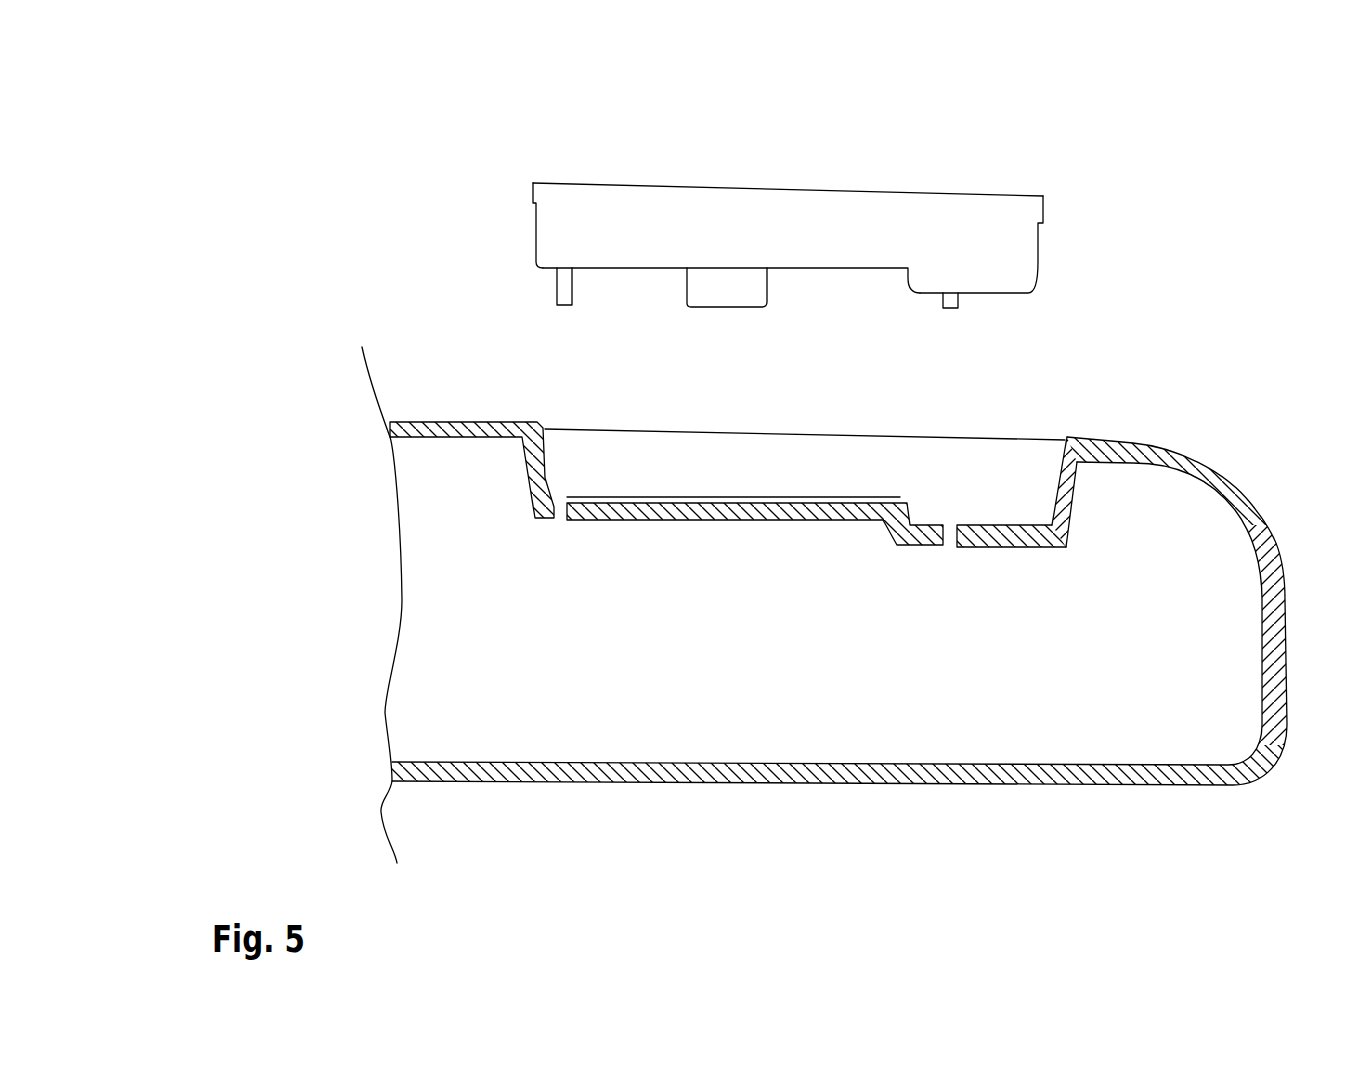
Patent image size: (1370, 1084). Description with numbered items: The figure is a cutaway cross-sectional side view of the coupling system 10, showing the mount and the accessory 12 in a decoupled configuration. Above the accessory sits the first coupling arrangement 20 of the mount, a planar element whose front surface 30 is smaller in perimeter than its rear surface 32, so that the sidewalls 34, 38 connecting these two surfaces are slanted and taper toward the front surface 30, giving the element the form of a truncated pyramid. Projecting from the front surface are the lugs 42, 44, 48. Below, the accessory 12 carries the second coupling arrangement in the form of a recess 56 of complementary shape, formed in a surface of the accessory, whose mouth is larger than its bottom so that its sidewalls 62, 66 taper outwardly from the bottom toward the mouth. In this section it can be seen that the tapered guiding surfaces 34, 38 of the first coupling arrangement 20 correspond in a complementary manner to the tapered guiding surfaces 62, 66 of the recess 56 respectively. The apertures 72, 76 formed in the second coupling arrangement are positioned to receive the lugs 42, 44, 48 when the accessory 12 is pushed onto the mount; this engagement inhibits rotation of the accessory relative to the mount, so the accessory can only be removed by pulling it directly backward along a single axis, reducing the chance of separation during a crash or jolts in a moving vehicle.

The coupling system 10 is at (243, 132).
The accessory 12 is at (1150, 808).
The first coupling arrangement 20 is at (628, 134).
The front surface 30 is at (633, 265).
The rear surface 32 is at (922, 193).
The sidewall 34 is at (1045, 227).
The sidewall 38 is at (535, 210).
The lug 42 is at (716, 294).
The lug 44 is at (952, 310).
The lug 48 is at (555, 292).
The recess 56 is at (790, 461).
The sidewall 62 is at (1055, 488).
The sidewall 66 is at (545, 473).
The aperture 72 is at (950, 540).
The aperture 76 is at (562, 515).